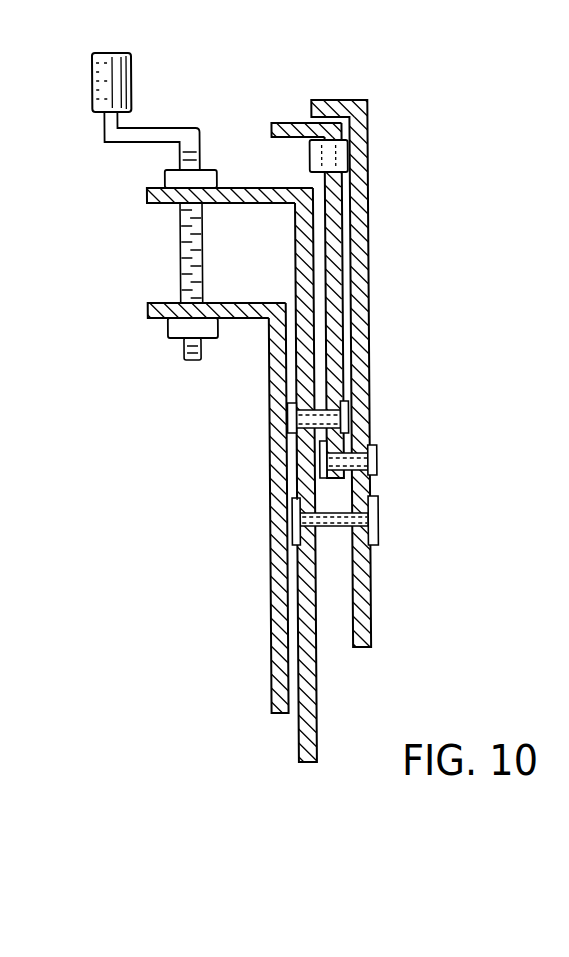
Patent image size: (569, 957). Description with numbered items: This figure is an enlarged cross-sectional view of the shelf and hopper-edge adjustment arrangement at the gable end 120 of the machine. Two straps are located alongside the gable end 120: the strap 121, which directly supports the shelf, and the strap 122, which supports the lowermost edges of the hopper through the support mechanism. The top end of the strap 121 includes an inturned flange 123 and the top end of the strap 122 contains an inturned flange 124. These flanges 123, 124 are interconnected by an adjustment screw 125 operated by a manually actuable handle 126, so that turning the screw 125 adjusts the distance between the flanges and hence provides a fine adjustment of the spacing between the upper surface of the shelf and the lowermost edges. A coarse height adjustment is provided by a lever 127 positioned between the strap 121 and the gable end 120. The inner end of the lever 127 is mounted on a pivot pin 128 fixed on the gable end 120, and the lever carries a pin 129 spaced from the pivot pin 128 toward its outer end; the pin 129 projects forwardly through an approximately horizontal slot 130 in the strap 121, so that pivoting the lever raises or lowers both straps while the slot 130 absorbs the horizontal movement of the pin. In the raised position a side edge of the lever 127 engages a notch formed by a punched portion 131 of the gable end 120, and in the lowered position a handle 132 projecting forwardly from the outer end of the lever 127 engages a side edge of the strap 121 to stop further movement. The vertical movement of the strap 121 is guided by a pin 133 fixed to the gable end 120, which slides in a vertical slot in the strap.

The gable end 120 is at (371, 374).
The strap 121 is at (294, 239).
The strap 122 is at (270, 638).
The inturned flange 123 is at (162, 204).
The inturned flange 124 is at (163, 302).
The adjustment screw 125 is at (177, 241).
The manually actuable handle 126 is at (135, 82).
The lever 127 is at (342, 300).
The pivot pin 128 is at (378, 456).
The pin 129 is at (372, 407).
The slot 130 is at (288, 447).
The punched portion 131 is at (306, 161).
The handle 132 is at (285, 122).
The pin 133 is at (338, 531).